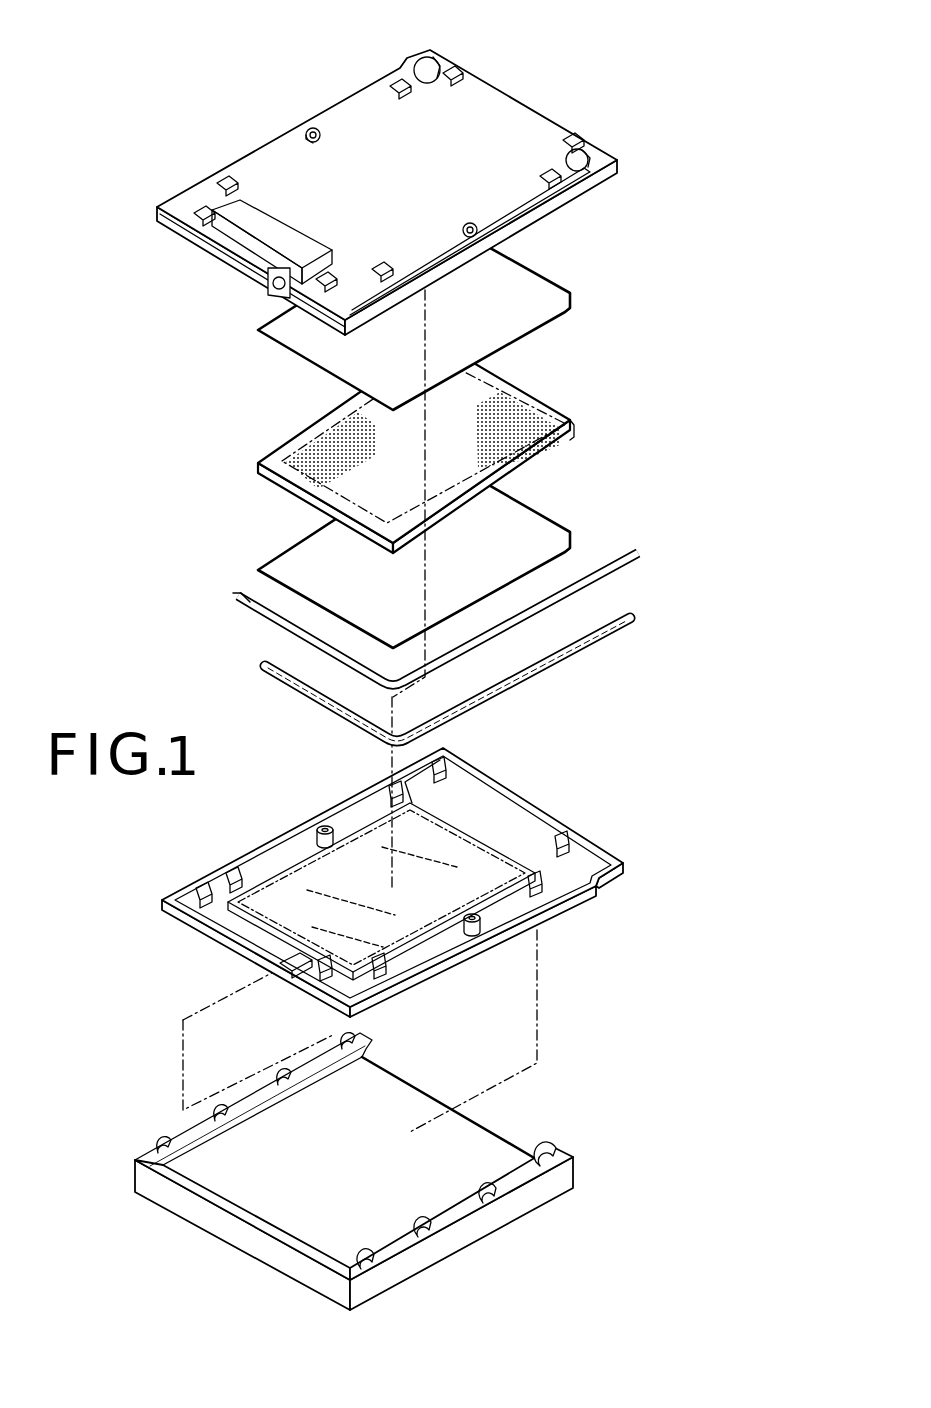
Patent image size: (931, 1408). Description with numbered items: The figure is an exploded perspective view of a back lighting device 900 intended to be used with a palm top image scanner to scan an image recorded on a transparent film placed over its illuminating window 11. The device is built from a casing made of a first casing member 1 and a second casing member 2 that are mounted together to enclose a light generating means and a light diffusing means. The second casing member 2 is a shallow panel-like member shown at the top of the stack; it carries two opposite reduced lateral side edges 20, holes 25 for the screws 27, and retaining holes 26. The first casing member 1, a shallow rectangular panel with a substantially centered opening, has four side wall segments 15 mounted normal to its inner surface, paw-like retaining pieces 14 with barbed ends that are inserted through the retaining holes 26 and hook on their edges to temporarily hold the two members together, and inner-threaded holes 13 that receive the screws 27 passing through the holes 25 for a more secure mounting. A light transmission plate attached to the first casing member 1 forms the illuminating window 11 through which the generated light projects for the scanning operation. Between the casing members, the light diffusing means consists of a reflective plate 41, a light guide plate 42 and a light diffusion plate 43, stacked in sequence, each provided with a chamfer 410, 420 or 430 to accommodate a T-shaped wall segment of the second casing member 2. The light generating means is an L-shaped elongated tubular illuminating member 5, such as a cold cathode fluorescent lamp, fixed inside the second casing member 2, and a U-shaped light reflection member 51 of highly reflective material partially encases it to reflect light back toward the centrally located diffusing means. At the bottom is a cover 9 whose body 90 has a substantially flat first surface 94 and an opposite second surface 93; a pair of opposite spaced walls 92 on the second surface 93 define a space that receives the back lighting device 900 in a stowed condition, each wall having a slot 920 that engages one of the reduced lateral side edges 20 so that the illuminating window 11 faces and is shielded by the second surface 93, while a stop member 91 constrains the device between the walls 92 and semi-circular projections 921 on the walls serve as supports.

The back lighting device 900 is at (708, 363).
The second casing member 2 is at (389, 218).
The reduced lateral side edges 20 is at (157, 219).
The holes 25 is at (305, 132).
The retaining holes 26 is at (573, 184).
The screws 27 is at (438, 58).
The reflective plate 41 is at (459, 313).
The chamfer 410 is at (569, 309).
The light guide plate 42 is at (467, 446).
The chamfer 420 is at (574, 433).
The light diffusion plate 43 is at (467, 551).
The chamfer 430 is at (578, 550).
The illuminating member 5 is at (632, 560).
The light reflection member 51 is at (626, 634).
The first casing member 1 is at (418, 861).
The illuminating window 11 is at (480, 882).
The inner-threaded holes 13 is at (473, 932).
The paw-like retaining pieces 14 is at (560, 884).
The side wall segments 15 is at (192, 919).
The cover 9 is at (385, 1163).
The body 90 is at (507, 1147).
The stop member 91 is at (278, 1251).
The walls 92 is at (555, 1147).
The slot 920 is at (367, 1057).
The semi-circular projections 921 is at (551, 1170).
The second surface 93 is at (392, 1123).
The first surface 94 is at (477, 1234).